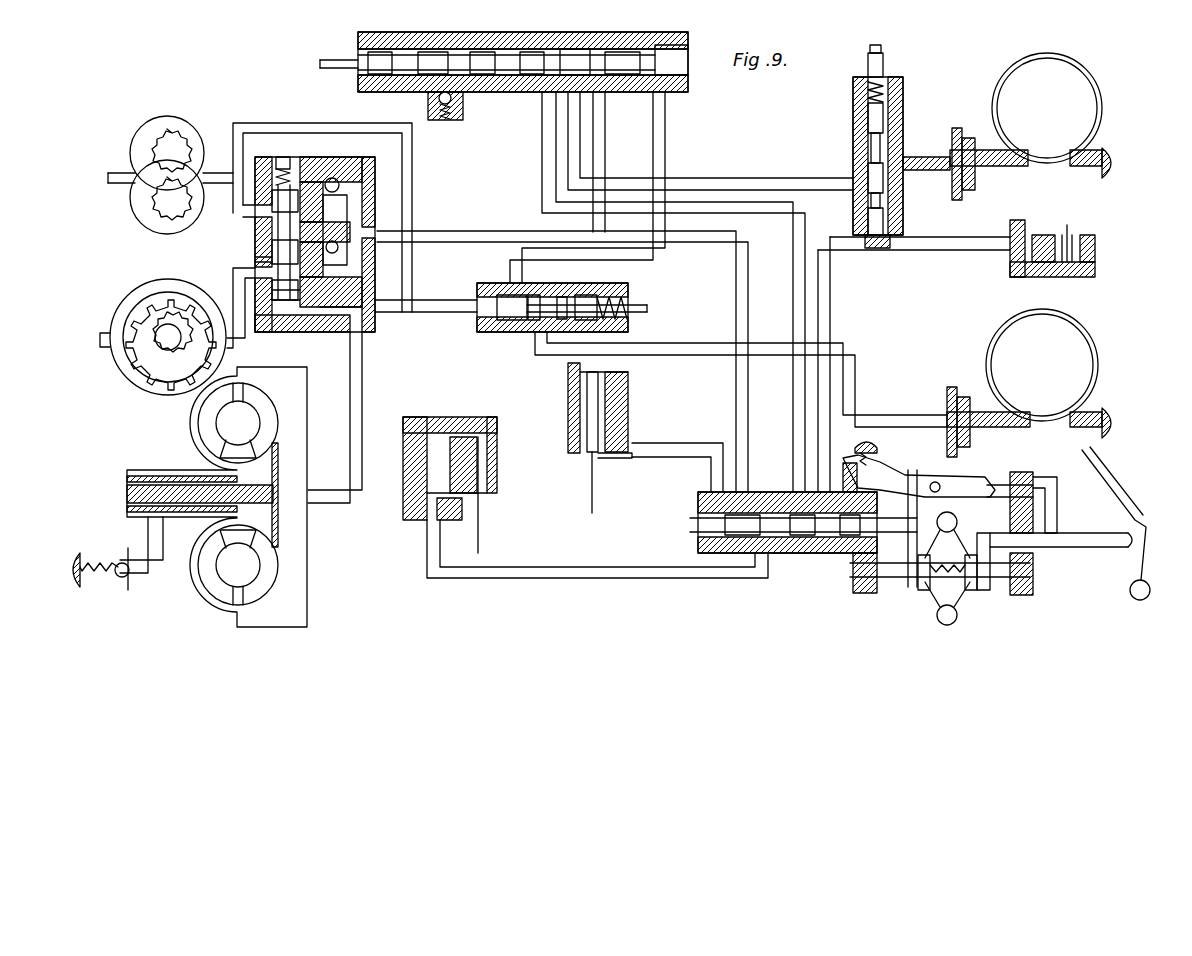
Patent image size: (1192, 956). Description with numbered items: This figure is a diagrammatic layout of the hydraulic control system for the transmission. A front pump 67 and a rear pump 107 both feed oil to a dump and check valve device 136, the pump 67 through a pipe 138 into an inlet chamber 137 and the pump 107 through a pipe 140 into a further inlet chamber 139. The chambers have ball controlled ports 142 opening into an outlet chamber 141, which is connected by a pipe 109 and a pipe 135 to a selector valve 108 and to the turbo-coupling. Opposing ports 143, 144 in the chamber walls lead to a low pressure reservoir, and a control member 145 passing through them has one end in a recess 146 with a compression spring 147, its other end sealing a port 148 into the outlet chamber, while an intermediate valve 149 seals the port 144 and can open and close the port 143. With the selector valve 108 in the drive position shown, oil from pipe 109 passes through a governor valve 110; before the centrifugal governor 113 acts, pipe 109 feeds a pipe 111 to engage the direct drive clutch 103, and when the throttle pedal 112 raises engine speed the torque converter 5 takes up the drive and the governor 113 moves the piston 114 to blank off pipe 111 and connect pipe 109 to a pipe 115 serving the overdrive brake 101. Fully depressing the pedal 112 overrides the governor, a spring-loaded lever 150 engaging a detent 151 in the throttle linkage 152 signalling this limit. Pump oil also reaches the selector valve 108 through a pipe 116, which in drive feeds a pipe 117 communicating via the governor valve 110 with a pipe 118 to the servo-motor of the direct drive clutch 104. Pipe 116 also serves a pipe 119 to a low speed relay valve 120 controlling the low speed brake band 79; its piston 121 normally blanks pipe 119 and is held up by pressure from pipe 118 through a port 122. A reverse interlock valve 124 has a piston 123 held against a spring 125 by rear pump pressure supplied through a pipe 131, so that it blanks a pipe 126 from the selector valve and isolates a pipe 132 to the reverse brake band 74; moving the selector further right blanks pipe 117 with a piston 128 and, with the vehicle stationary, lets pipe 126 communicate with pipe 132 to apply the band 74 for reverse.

The torque converter 5 is at (272, 626).
The front pump 67 is at (150, 390).
The reverse brake band 74 is at (997, 339).
The low speed brake band 79 is at (1008, 66).
The overdrive brake 101 is at (497, 447).
The direct drive clutch 103 is at (620, 386).
The direct drive clutch 104 is at (1068, 234).
The rear pump 107 is at (160, 126).
The selector valve 108 is at (634, 80).
The pipe 109 is at (478, 231).
The governor valve 110 is at (812, 548).
The pipe 111 is at (676, 452).
The throttle pedal 112 is at (1112, 480).
The centrifugal governor 113 is at (958, 602).
The piston 114 is at (725, 527).
The pipe 115 is at (603, 568).
The pipe 116 is at (603, 110).
The pipe 117 is at (542, 138).
The pipe 118 is at (950, 250).
The pipe 119 is at (568, 160).
The low speed relay valve 120 is at (853, 110).
The piston 121 is at (868, 170).
The port 122 is at (892, 238).
The piston 123 is at (500, 320).
The reverse interlock valve 124 is at (560, 296).
The spring 125 is at (622, 286).
The pipe 126 is at (667, 112).
The piston 128 is at (537, 77).
The pipe 131 is at (442, 312).
The pipe 132 is at (690, 335).
The pipe 135 is at (362, 386).
The dump and check valve device 136 is at (330, 325).
The inlet chamber 137 is at (342, 260).
The pipe 138 is at (240, 288).
The inlet chamber 139 is at (337, 200).
The pipe 140 is at (234, 204).
The outlet chamber 141 is at (372, 318).
The ball controlled ports 142 is at (390, 180).
The port 143 is at (253, 262).
The port 144 is at (258, 215).
The control member 145 is at (342, 276).
The recess 146 is at (300, 175).
The compression spring 147 is at (278, 160).
The port 148 is at (280, 305).
The valve 149 is at (258, 255).
The spring-loaded lever 150 is at (962, 478).
The detent 151 is at (970, 528).
The throttle linkage 152 is at (1013, 470).